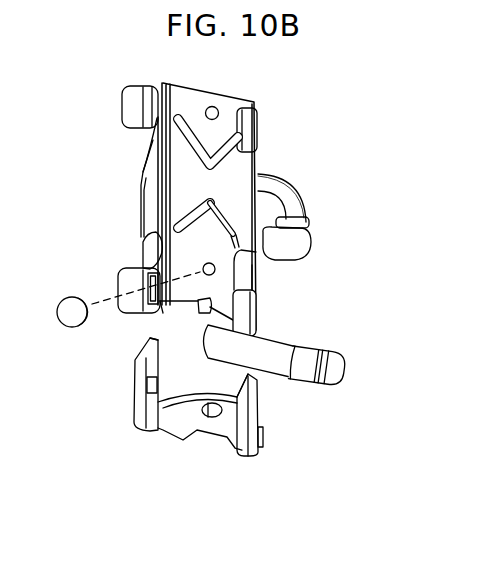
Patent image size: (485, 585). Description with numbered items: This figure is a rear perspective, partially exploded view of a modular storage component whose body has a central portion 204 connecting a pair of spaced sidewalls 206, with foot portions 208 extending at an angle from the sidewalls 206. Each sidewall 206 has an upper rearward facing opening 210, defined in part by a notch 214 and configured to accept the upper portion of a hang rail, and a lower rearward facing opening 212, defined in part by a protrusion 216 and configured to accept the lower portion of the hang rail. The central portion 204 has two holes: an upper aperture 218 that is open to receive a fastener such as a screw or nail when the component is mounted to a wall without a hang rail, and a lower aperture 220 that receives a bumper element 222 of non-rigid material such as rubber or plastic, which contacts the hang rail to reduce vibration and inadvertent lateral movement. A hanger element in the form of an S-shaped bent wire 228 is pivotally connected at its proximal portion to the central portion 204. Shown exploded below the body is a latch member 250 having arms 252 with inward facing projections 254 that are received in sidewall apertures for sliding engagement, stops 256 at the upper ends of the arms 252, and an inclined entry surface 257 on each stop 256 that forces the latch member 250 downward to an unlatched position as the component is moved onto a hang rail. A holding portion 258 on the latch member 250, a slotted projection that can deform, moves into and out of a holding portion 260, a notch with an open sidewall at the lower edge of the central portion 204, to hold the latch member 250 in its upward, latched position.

The central portion 204 is at (230, 98).
The spaced sidewall 206 is at (140, 193).
The foot portion 208 is at (125, 100).
The upper rearward facing opening 210 is at (155, 140).
The lower rearward facing opening 212 is at (142, 257).
The notch 214 is at (153, 140).
The protrusion 216 is at (140, 240).
The upper aperture 218 is at (216, 96).
The lower aperture 220 is at (265, 293).
The bumper element 222 is at (67, 313).
The S-shaped bent wire 228 is at (292, 182).
The latch member 250 is at (200, 430).
The arm 252 is at (133, 433).
The inward facing projection 254 is at (133, 392).
The stop 256 is at (135, 358).
The inclined entry surface 257 is at (137, 365).
The holding portion 258 is at (218, 418).
The holding portion 260 is at (195, 292).